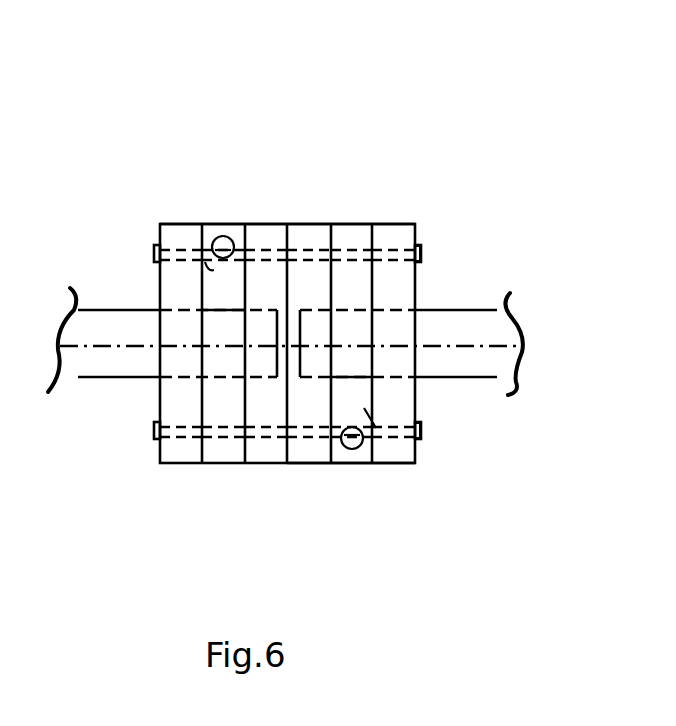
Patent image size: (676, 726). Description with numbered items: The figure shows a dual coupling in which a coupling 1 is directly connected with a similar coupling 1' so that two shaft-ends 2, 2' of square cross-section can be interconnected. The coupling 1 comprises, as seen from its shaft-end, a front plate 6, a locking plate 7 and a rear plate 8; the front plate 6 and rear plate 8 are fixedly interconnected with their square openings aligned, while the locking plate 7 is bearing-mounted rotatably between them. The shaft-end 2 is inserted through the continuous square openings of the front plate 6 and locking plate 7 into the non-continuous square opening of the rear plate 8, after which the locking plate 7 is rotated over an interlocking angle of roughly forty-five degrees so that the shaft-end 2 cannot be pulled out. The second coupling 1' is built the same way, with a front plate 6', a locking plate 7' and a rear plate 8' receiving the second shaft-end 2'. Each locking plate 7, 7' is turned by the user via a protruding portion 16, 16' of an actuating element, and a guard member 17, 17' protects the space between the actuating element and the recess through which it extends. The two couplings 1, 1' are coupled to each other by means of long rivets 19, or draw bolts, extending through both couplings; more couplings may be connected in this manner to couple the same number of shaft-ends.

The coupling 1 is at (287, 154).
The similar coupling 1' is at (351, 515).
The shaft-end 2 is at (177, 274).
The shaft-end 2' is at (415, 270).
The front plate 6 is at (177, 389).
The front plate 6' is at (402, 301).
The locking plate 7 is at (223, 388).
The locking plate 7' is at (357, 314).
The rear plate 8 is at (266, 388).
The rear plate 8' is at (309, 315).
The protruding portion 16 is at (249, 193).
The protruding portion 16' is at (329, 493).
The guard member 17 is at (177, 196).
The guard member 17' is at (367, 499).
The rivets 19 is at (420, 251).